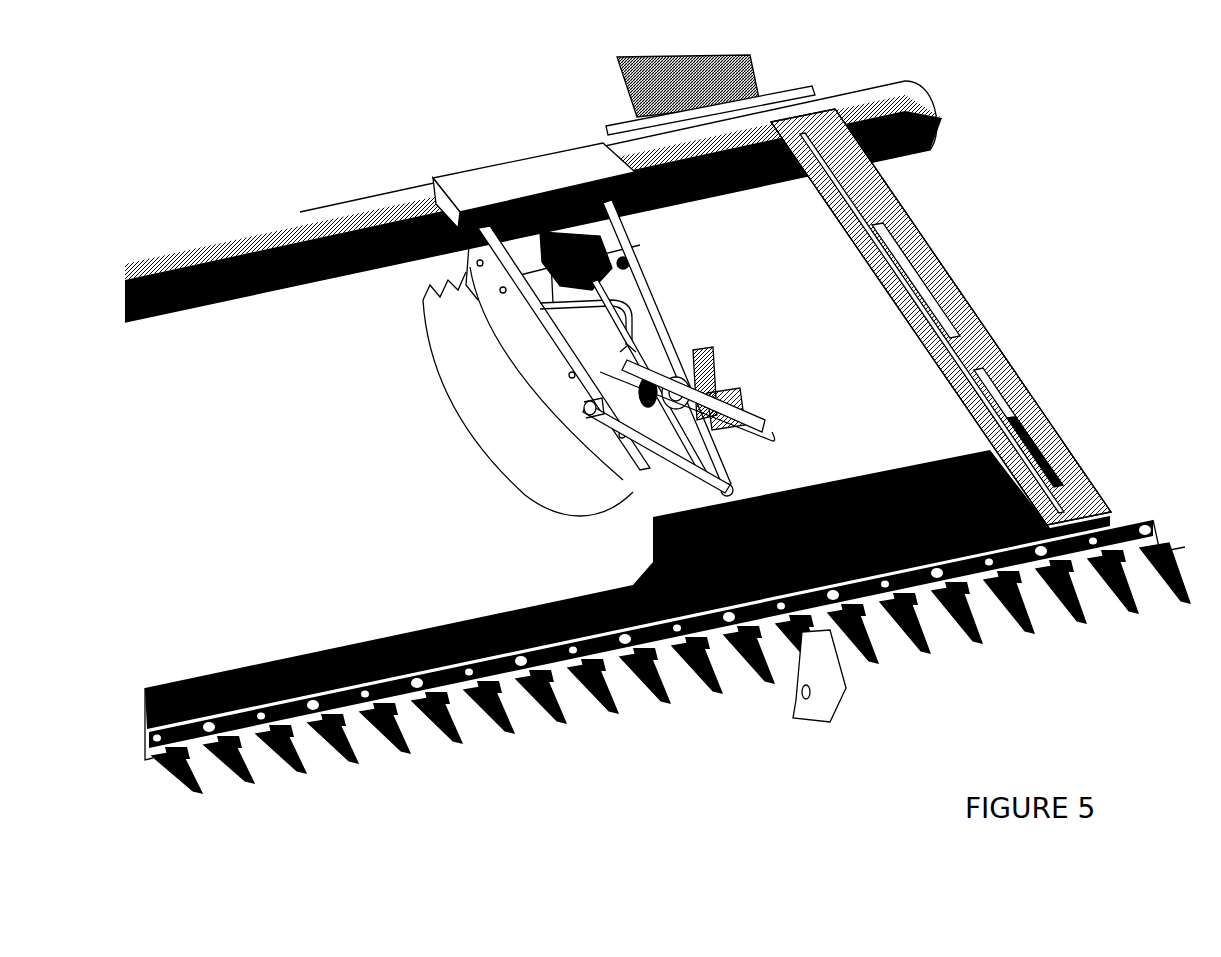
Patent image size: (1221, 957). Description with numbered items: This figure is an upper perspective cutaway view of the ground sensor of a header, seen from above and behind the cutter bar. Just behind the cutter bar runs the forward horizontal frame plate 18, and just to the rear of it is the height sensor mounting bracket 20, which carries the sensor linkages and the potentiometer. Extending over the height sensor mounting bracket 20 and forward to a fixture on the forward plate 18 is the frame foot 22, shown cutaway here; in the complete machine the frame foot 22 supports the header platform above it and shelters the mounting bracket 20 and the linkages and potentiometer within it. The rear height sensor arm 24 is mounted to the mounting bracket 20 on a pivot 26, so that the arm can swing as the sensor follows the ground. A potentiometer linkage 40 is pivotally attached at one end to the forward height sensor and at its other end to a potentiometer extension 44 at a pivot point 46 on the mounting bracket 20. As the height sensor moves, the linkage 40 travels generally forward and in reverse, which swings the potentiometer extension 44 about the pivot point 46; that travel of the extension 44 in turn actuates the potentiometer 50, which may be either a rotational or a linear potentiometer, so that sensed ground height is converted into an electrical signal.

The forward horizontal frame plate 18 is at (1028, 478).
The height sensor mounting bracket 20 is at (667, 323).
The frame foot 22 is at (470, 188).
The rear height sensor arm 24 is at (495, 457).
The pivot 26 is at (587, 417).
The potentiometer linkage 40 is at (712, 466).
The potentiometer extension 44 is at (577, 322).
The pivot point 46 is at (627, 358).
The potentiometer 50 is at (565, 262).